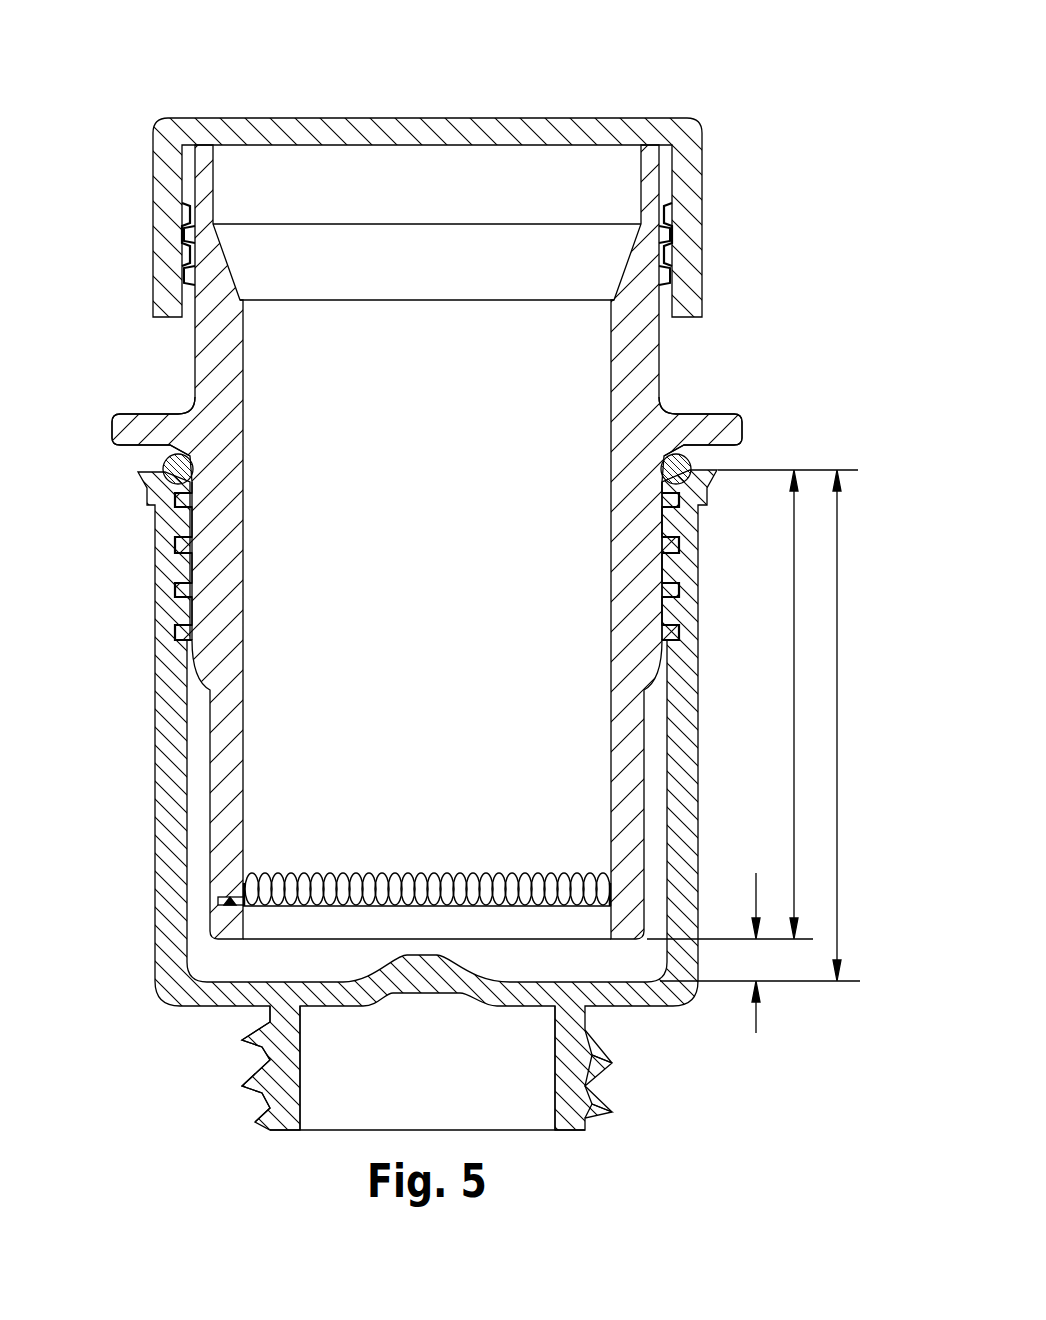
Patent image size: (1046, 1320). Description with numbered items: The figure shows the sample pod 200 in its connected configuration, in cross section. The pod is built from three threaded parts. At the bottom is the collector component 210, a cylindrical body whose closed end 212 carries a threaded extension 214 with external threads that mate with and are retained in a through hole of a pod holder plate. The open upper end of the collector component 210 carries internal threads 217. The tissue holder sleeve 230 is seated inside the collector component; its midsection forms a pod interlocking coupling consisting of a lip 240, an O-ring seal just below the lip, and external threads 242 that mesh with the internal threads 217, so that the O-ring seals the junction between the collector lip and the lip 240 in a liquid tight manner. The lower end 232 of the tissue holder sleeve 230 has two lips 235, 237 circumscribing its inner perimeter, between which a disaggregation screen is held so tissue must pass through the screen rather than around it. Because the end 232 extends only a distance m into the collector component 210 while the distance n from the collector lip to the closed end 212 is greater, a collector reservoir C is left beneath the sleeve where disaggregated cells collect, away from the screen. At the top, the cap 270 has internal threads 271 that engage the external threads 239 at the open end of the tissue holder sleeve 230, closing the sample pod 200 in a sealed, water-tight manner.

The sample pod 200 is at (835, 105).
The cap 270 is at (655, 118).
The internal threads 271 is at (668, 232).
The external threads 239 is at (667, 257).
The tissue holder sleeve 230 is at (660, 350).
The lip 240 is at (735, 430).
The external threads 242 is at (668, 543).
The internal threads 217 is at (673, 567).
The collector component 210 is at (155, 690).
The lip 235 is at (240, 880).
The lip 237 is at (233, 923).
The end 232 is at (255, 940).
The end 212 is at (222, 1007).
The threaded extension 214 is at (600, 1098).